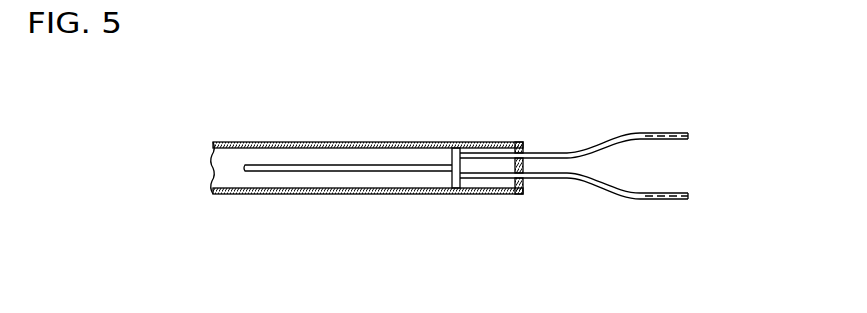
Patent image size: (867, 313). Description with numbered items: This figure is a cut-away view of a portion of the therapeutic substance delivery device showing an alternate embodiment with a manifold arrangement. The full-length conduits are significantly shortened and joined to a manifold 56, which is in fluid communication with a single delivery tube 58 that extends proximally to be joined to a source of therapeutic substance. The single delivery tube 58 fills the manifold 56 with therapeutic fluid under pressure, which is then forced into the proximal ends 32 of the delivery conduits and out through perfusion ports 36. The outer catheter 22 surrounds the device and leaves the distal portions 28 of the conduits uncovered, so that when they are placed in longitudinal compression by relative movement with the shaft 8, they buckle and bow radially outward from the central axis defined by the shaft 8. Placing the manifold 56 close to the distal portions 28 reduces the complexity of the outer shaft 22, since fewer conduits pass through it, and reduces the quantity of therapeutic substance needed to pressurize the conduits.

The outer catheter 22 is at (242, 195).
The single delivery tube 58 is at (325, 170).
The manifold 56 is at (452, 158).
The proximal ends of delivery conduits 32 is at (538, 168).
The distal portion of the conduits 28 is at (605, 143).
The perfusion ports 36 is at (672, 133).
The shaft 8 is at (558, 180).